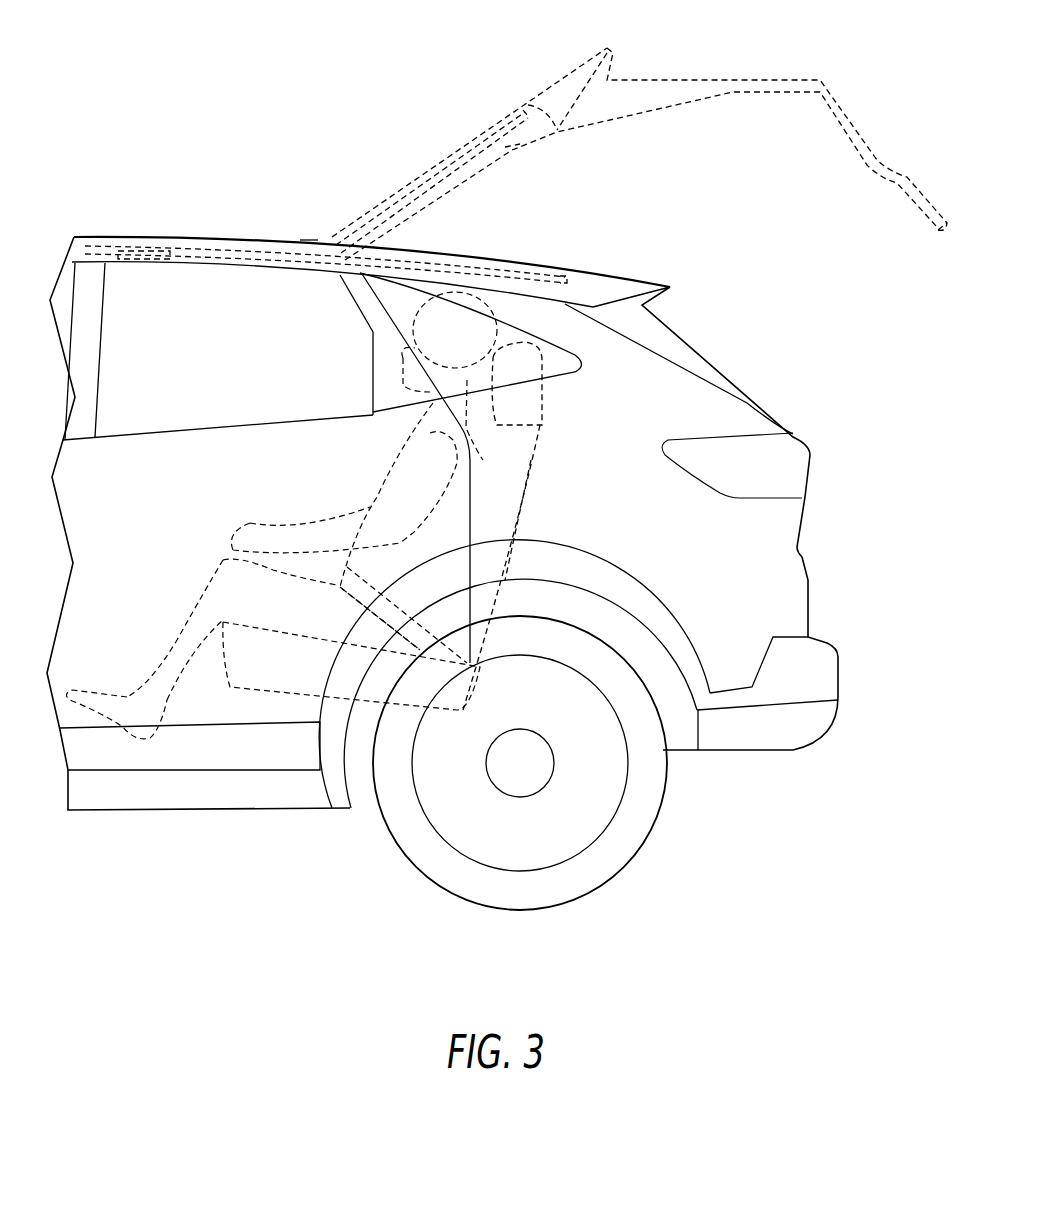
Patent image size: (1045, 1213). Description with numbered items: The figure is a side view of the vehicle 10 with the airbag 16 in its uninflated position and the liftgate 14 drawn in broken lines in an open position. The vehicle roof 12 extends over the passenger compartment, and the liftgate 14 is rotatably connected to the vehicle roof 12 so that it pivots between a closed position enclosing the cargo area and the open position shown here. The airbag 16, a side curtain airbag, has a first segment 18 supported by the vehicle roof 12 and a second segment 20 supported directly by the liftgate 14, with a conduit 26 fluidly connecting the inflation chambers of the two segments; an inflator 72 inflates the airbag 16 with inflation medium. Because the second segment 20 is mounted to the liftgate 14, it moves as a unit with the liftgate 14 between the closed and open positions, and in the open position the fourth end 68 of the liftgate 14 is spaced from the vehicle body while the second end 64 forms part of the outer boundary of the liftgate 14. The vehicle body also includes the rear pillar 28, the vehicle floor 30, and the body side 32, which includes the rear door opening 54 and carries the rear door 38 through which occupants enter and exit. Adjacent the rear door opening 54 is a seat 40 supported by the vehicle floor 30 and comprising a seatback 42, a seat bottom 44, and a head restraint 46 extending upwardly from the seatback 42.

The vehicle 10 is at (253, 122).
The vehicle roof 12 is at (195, 236).
The liftgate 14 is at (807, 79).
The airbag 16 is at (246, 243).
The first segment 18 is at (125, 238).
The second segment 20 is at (455, 153).
The conduit 26 is at (307, 237).
The rear pillar 28 is at (585, 322).
The vehicle floor 30 is at (250, 752).
The body side 32 is at (718, 617).
The rear door 38 is at (137, 526).
The seat 40 is at (537, 478).
The seatback 42 is at (523, 503).
The seat bottom 44 is at (378, 655).
The head restraint 46 is at (545, 392).
The rear door opening 54 is at (390, 323).
The second end 64 is at (512, 152).
The fourth end 68 is at (941, 236).
The inflator 72 is at (136, 260).